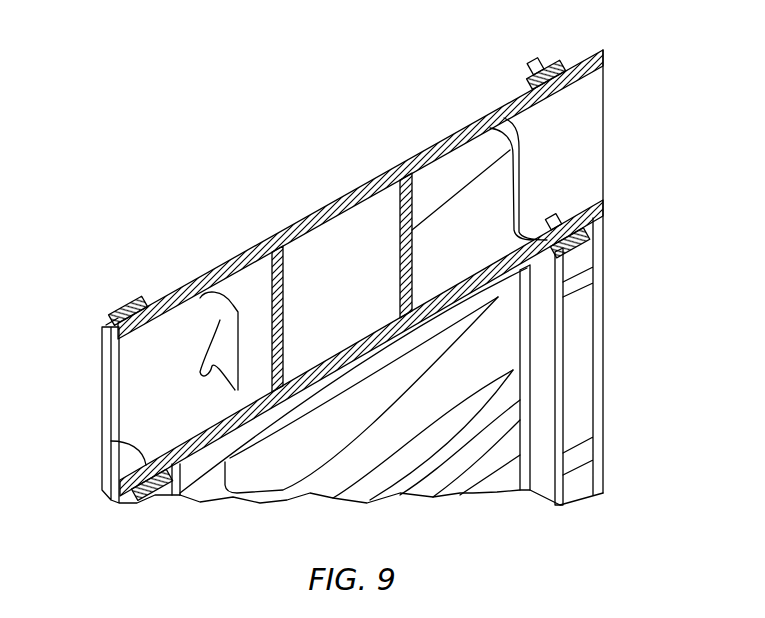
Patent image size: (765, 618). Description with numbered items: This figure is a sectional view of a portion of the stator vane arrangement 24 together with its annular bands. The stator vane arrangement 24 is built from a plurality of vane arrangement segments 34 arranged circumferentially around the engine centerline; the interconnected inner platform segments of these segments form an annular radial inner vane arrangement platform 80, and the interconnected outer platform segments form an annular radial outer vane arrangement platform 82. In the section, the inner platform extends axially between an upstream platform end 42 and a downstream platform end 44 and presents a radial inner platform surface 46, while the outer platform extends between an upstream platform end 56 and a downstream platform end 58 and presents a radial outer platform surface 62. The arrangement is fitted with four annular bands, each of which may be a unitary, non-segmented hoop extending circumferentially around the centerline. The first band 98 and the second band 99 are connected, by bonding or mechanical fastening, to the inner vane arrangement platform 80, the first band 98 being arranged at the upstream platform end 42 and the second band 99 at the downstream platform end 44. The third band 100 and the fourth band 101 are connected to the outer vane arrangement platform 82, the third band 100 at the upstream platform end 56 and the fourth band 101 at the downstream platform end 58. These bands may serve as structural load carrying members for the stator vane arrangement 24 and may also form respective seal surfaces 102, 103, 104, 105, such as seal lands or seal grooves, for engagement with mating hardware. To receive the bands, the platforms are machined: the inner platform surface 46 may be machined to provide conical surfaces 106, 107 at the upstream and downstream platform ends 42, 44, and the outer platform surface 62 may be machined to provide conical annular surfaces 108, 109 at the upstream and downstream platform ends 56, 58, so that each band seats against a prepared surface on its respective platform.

The stator vane arrangement 24 is at (183, 193).
The vane arrangement segment 34 is at (238, 253).
The upstream platform end 42 is at (115, 480).
The downstream platform end 44 is at (597, 218).
The radial inner platform surface 46 is at (593, 253).
The upstream platform end 56 is at (100, 335).
The downstream platform end 58 is at (605, 52).
The radial outer platform surface 62 is at (487, 117).
The radial inner vane arrangement platform 80 is at (598, 333).
The radial outer vane arrangement platform 82 is at (603, 140).
The first band 98 is at (100, 480).
The second band 99 is at (563, 398).
The third band 100 is at (110, 318).
The fourth band 101 is at (532, 73).
The seal surface 102 is at (155, 497).
The seal surface 103 is at (540, 482).
The seal surface 104 is at (132, 303).
The seal surface 105 is at (557, 50).
The conical surface 106 is at (140, 460).
The conical surface 107 is at (577, 203).
The annular surface 108 is at (118, 345).
The annular surface 109 is at (603, 80).